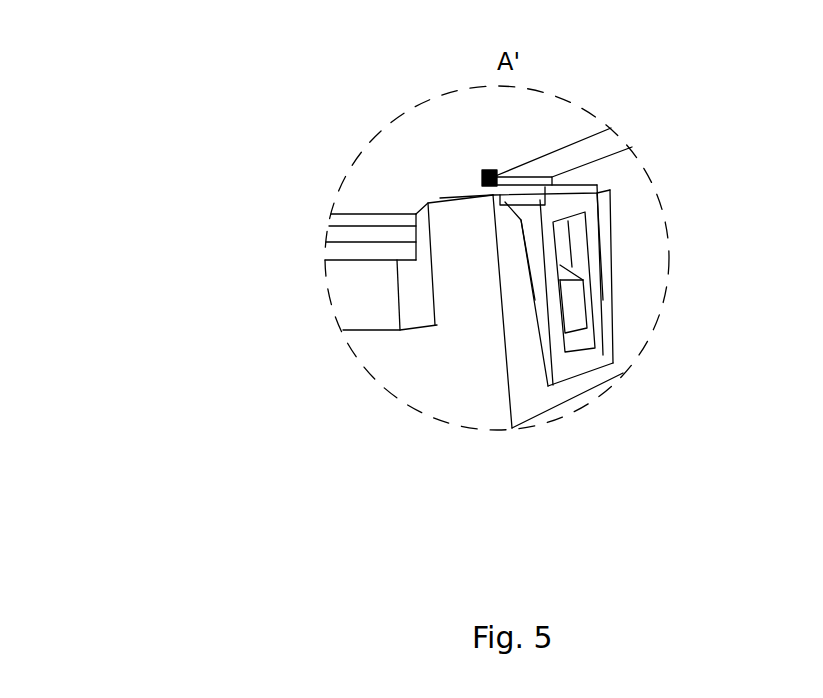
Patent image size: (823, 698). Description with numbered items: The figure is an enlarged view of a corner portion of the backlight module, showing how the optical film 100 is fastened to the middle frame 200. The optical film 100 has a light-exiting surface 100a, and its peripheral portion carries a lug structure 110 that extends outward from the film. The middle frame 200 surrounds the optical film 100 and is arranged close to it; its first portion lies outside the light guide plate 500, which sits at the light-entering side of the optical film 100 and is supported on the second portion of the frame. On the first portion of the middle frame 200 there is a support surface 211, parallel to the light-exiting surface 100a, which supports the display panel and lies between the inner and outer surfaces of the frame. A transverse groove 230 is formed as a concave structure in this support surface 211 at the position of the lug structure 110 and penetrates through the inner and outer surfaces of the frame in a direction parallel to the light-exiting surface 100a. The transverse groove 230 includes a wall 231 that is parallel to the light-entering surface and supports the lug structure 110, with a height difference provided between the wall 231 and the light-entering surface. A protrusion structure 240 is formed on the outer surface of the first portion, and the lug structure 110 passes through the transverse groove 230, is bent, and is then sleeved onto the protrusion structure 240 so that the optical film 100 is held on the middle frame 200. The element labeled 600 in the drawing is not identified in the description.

The optical film 100 is at (347, 227).
The light-exiting surface 100a is at (460, 172).
The lug structure 110 is at (598, 196).
The middle frame 200 is at (480, 344).
The support surface 211 is at (550, 167).
The transverse groove 230 is at (490, 178).
The wall 231 is at (507, 227).
The protrusion structure 240 is at (568, 312).
The light guide plate 500 is at (347, 317).
The stacked plates 600 is at (332, 243).